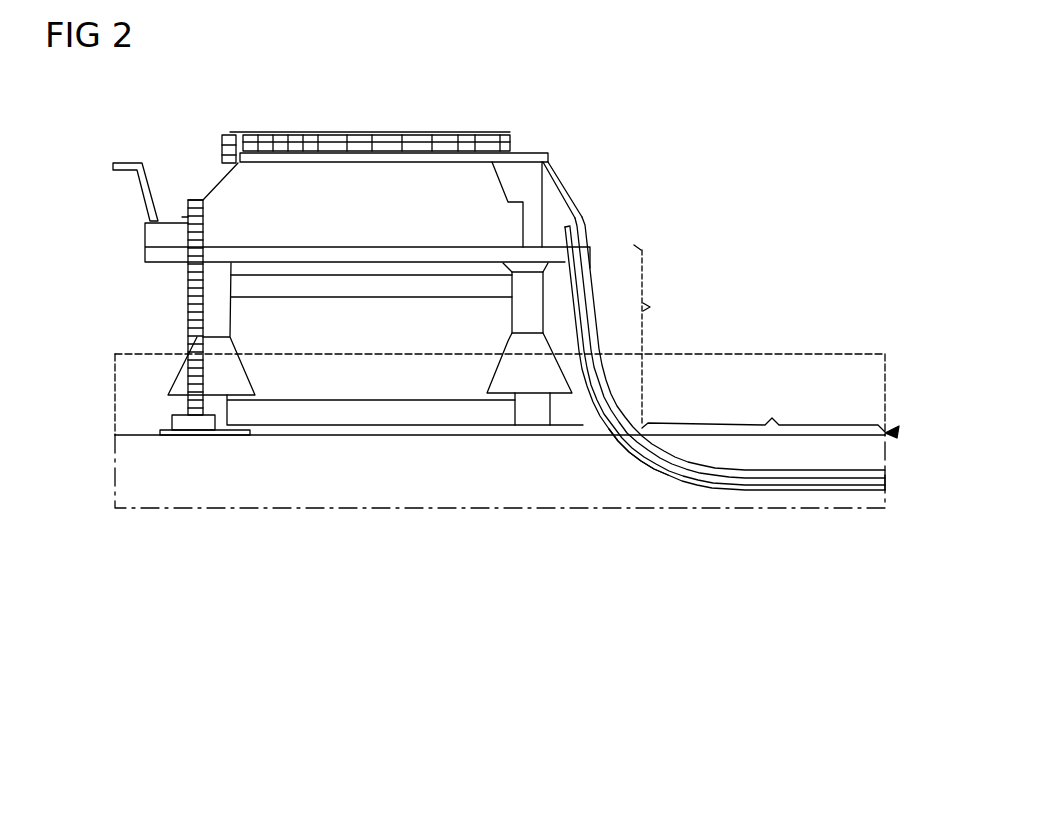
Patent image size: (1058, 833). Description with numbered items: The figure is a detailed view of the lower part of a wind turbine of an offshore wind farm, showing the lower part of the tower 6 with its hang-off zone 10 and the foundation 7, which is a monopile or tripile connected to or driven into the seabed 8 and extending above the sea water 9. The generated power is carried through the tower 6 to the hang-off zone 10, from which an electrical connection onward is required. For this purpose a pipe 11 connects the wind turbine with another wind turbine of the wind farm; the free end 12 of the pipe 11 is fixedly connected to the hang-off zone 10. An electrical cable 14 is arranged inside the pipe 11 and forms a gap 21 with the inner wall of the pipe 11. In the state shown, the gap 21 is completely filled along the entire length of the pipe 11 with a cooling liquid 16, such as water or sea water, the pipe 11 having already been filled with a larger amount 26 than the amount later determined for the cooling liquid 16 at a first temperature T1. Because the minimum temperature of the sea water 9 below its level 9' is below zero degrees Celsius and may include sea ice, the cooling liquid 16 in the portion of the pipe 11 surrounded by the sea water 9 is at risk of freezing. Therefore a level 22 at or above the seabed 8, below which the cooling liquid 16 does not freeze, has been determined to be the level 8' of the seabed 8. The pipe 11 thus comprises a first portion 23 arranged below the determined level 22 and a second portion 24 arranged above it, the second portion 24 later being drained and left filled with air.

The tower 6 is at (533, 150).
The hang-off zone 10 is at (552, 205).
The free end of the pipe 12 is at (588, 267).
The foundation 7 is at (225, 313).
The electrical cable 14 is at (572, 302).
The gap 21 is at (595, 417).
The larger amount 26 is at (762, 488).
The cooling liquid 16 is at (653, 470).
The first temperature T1 is at (713, 483).
The sea water 9 is at (79, 394).
The level of the sea water 9' is at (500, 316).
The pipe 11 is at (770, 378).
The seabed 8 is at (500, 501).
The level of the seabed 8' is at (500, 465).
The second portion 24 is at (760, 300).
The first portion 23 is at (763, 409).
The level 22 is at (897, 431).